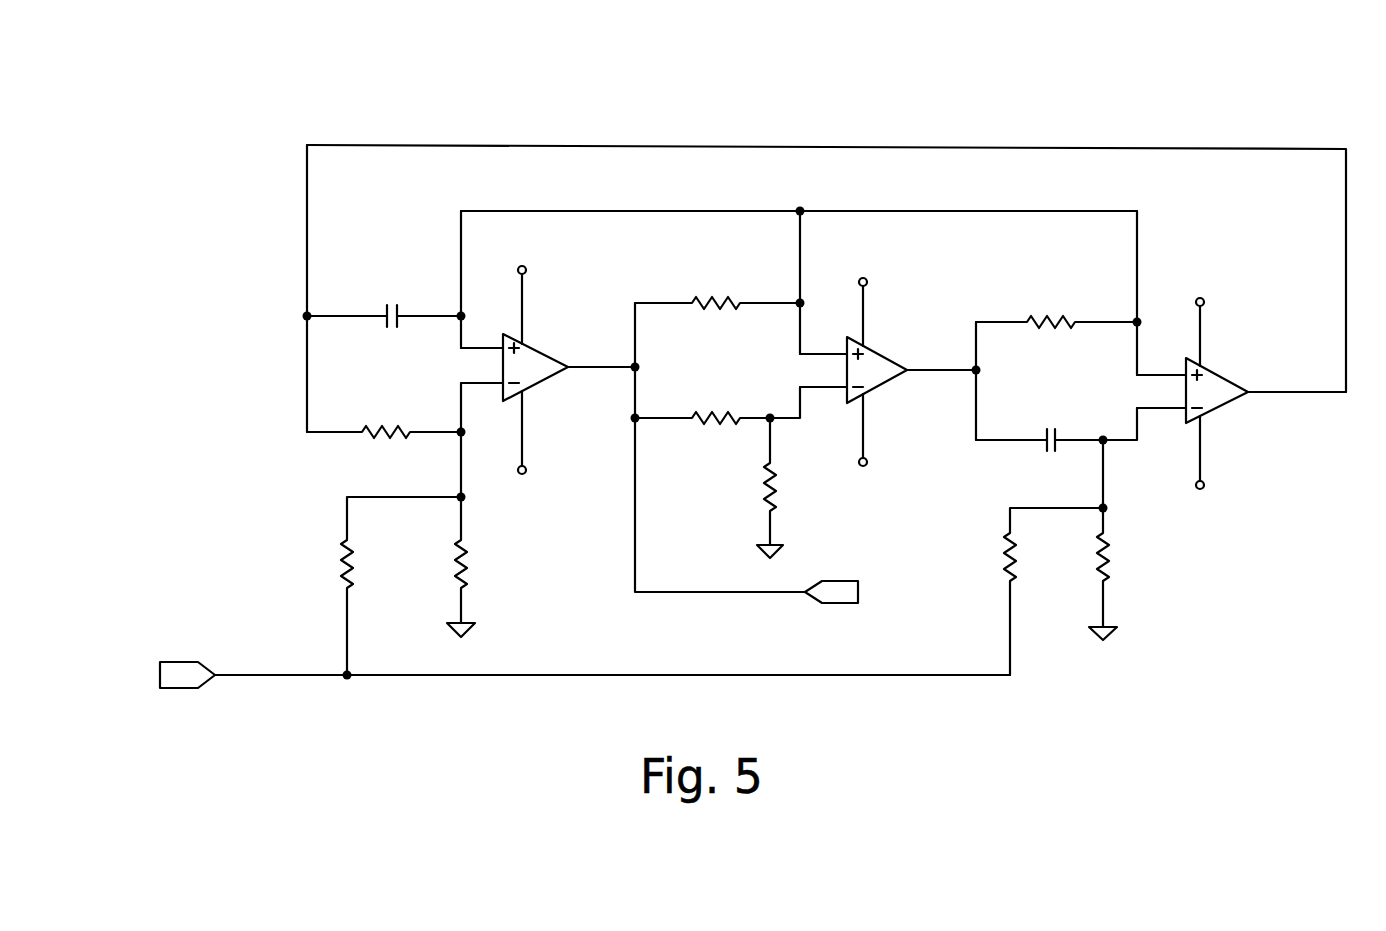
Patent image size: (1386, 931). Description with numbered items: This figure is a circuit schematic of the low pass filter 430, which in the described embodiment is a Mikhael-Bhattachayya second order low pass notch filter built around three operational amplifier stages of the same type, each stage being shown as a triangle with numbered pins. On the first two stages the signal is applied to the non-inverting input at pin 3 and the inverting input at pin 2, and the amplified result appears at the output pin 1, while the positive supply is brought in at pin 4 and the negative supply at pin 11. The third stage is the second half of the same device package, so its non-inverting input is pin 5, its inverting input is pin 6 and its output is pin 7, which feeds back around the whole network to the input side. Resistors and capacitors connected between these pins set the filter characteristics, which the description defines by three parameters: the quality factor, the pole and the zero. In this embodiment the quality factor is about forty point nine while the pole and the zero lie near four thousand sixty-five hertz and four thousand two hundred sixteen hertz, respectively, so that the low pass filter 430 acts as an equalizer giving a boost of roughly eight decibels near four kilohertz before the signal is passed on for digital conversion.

The low pass filter 430 is at (841, 66).
The op-amp output pin 1 is at (769, 355).
The op-amp inverting input pin 2 is at (654, 374).
The op-amp non-inverting input pin 3 is at (654, 340).
The op-amp positive supply pin 4 is at (859, 302).
The op-amp negative supply pin 11 is at (852, 454).
The op-amp non-inverting input pin 5 is at (1161, 362).
The op-amp inverting input pin 6 is at (1161, 395).
The op-amp output pin 7 is at (1297, 379).